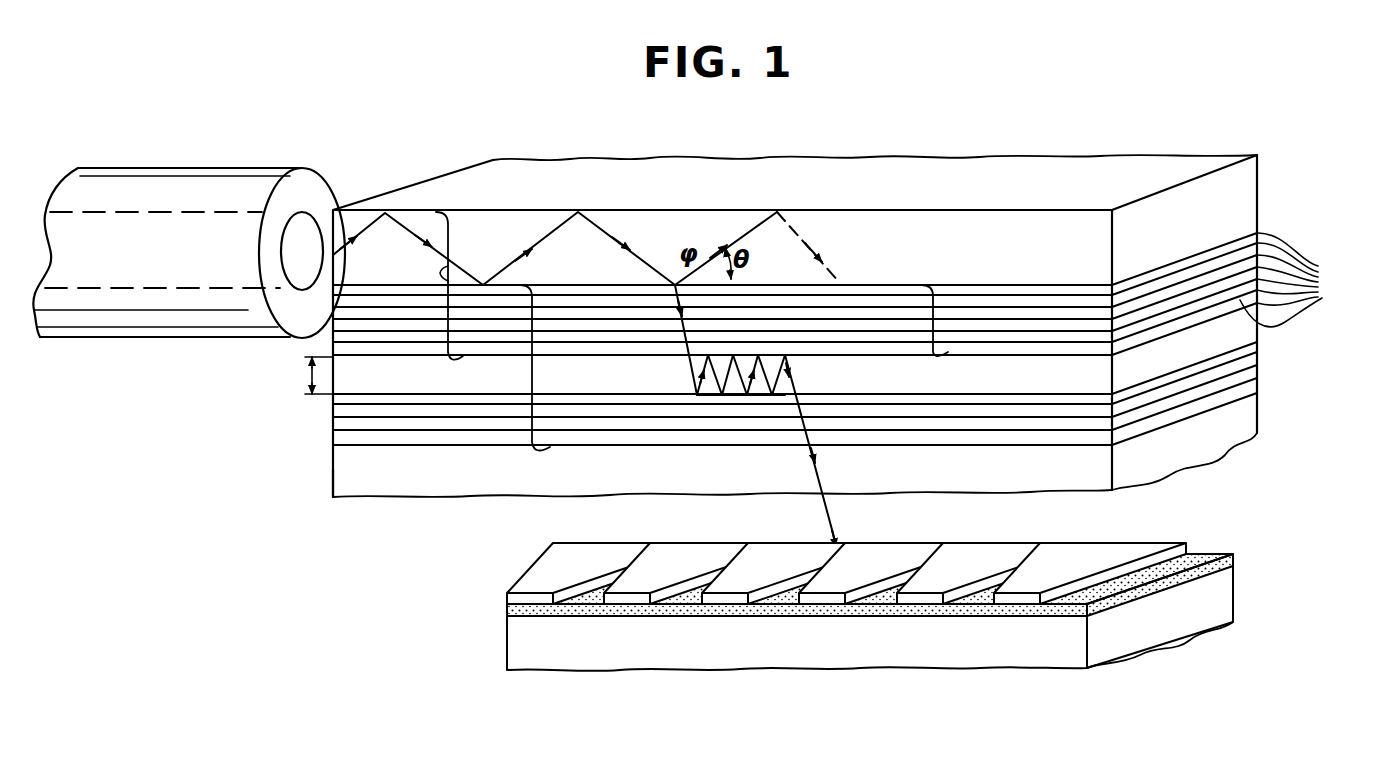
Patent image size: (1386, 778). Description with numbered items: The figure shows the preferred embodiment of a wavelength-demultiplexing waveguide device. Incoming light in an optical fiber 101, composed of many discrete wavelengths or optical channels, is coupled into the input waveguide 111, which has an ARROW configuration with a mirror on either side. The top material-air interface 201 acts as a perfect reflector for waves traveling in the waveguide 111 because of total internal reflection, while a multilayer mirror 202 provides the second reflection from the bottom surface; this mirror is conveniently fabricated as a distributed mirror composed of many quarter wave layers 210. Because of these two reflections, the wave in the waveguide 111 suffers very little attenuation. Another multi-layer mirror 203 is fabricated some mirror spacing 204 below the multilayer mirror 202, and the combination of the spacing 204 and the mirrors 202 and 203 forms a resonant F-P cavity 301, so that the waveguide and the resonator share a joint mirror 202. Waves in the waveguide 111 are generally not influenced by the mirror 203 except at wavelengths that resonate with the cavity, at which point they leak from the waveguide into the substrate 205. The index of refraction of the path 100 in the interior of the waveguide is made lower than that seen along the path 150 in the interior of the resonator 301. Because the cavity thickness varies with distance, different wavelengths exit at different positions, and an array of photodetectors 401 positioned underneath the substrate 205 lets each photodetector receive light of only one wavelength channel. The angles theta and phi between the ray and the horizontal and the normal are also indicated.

The path in the interior of the waveguide 100 is at (402, 240).
The optical fiber 101 is at (213, 180).
The input waveguide 111 is at (435, 286).
The path in the interior of the resonator 150 is at (682, 373).
The top material-air interface 201 is at (843, 208).
The multilayer mirror 202 is at (937, 312).
The multi-layer mirror 203 is at (1262, 343).
The mirror spacing 204 is at (302, 372).
The substrate 205 is at (480, 477).
The quarter wave layers 210 is at (1304, 280).
The resonant F-P cavity 301 is at (530, 373).
The array of photodetectors 401 is at (1250, 532).